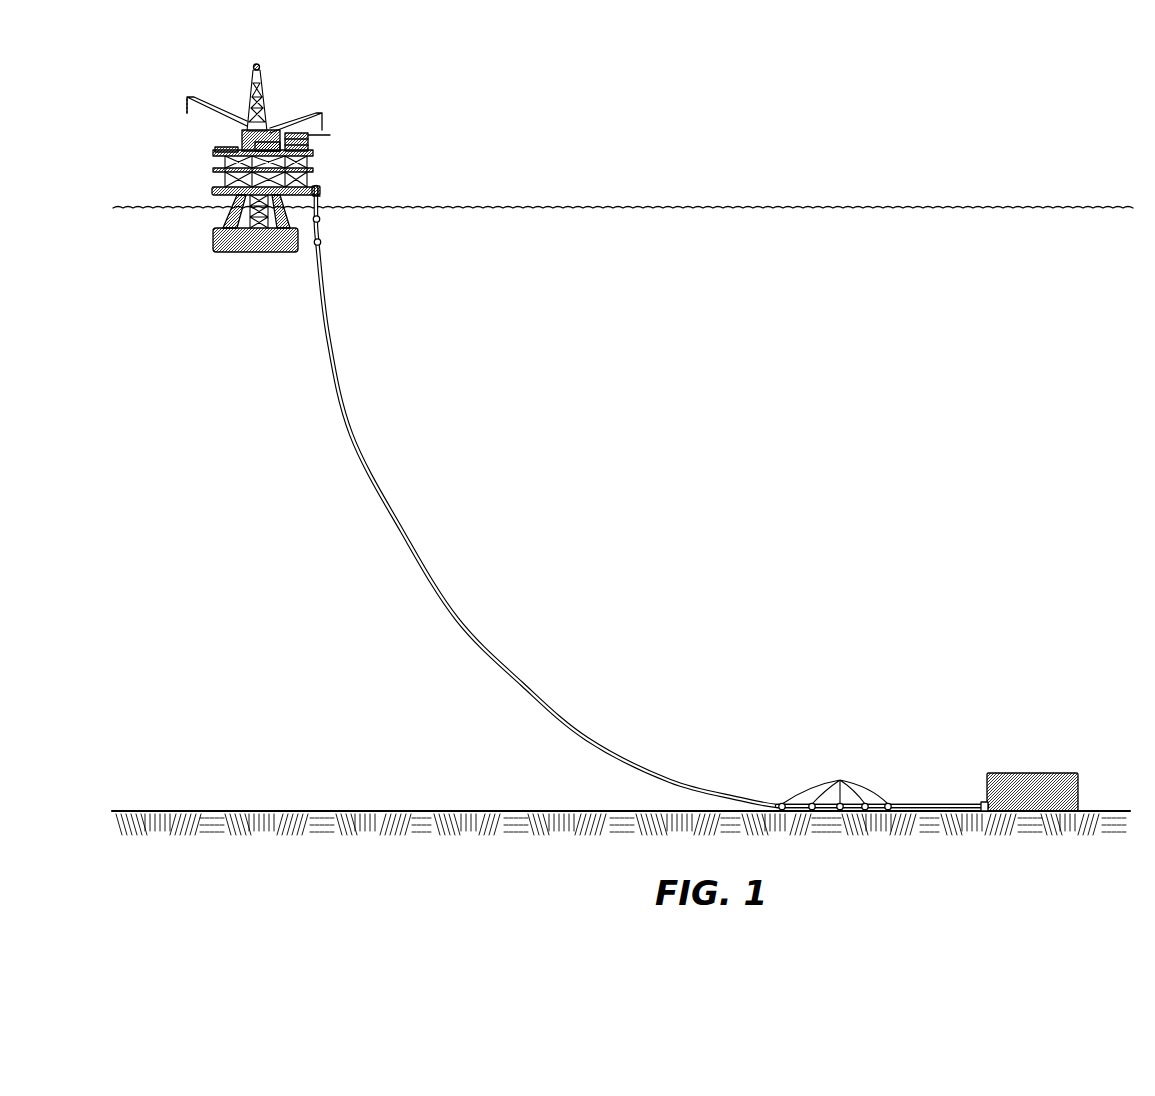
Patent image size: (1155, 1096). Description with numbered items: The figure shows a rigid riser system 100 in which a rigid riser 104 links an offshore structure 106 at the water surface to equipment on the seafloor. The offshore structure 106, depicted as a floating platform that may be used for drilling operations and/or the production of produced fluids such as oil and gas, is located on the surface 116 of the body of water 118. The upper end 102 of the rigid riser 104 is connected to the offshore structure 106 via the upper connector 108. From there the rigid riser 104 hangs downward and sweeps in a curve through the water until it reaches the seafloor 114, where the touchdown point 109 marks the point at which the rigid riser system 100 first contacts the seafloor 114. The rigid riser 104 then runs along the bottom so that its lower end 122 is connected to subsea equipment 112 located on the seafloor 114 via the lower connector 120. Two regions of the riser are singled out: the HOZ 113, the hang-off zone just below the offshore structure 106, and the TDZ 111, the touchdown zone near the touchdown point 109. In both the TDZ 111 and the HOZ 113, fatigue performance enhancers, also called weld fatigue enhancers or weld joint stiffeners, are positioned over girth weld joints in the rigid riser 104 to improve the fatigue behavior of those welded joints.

The rigid riser system 100 is at (579, 551).
The upper end 102 is at (321, 194).
The rigid riser 104 is at (396, 526).
The offshore structure 106 is at (186, 158).
The upper connector 108 is at (318, 186).
The touchdown point 109 is at (806, 812).
The TDZ 111 is at (805, 764).
The subsea equipment 112 is at (1040, 773).
The HOZ 113 is at (336, 182).
The seafloor 114 is at (225, 811).
The surface 116 is at (768, 207).
The body of water 118 is at (817, 403).
The lower connector 120 is at (984, 804).
The lower end 122 is at (980, 806).